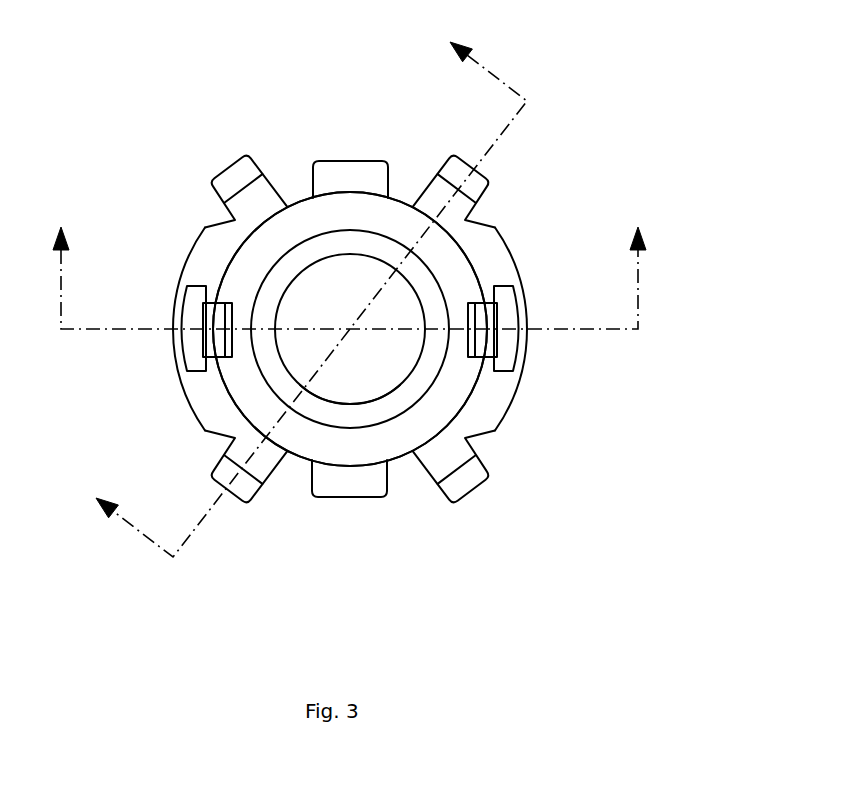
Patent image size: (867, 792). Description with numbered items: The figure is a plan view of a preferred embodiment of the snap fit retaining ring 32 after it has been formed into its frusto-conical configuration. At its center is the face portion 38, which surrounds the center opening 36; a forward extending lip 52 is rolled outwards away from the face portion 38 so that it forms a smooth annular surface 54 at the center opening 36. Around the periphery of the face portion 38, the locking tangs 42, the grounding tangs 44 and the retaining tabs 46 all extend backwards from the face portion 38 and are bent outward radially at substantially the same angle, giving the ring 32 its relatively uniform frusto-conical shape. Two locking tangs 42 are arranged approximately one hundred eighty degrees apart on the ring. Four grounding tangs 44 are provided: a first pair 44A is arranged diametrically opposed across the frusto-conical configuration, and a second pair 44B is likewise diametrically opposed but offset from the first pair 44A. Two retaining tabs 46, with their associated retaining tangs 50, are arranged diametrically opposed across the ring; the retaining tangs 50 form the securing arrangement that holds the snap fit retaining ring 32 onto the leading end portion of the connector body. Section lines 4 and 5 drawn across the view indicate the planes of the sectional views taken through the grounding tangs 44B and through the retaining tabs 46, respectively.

The snap fit retaining ring 32 is at (633, 104).
The center opening 36 is at (350, 313).
The face portion 38 is at (360, 223).
The locking tangs 42 is at (350, 160).
The grounding tangs 44 is at (477, 492).
The first pair of grounding tangs 44A is at (223, 168).
The second pair of grounding tangs 44B is at (490, 182).
The retaining tabs 46 is at (200, 403).
The retaining tangs 50 is at (190, 312).
The forward extending lip 52 is at (425, 290).
The smooth annular surface 54 is at (357, 403).
The section line 4- 4 is at (311, 299).
The section line 5- 5 is at (349, 278).